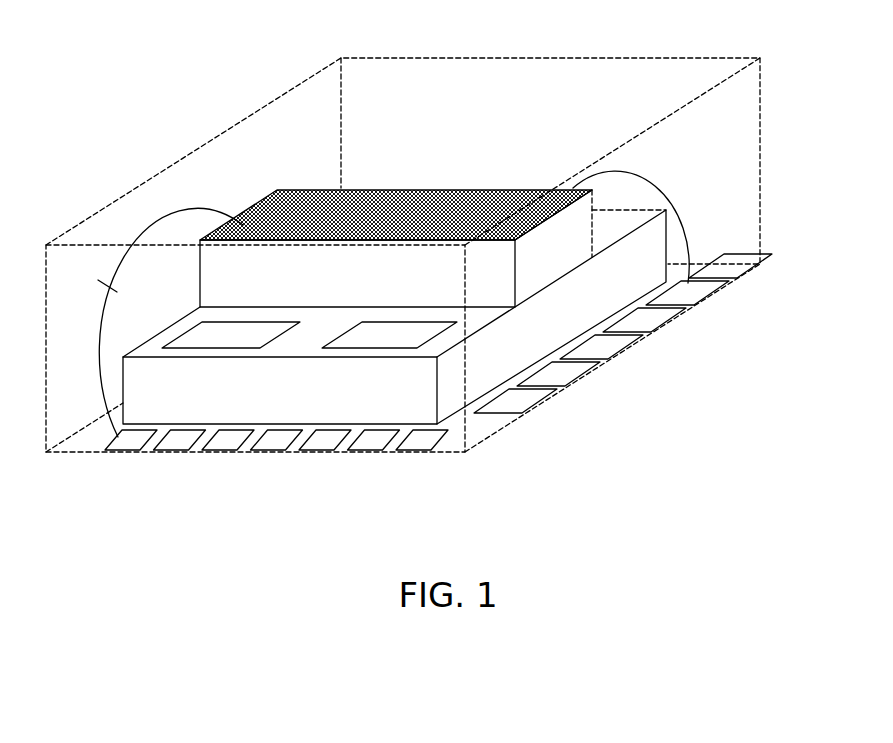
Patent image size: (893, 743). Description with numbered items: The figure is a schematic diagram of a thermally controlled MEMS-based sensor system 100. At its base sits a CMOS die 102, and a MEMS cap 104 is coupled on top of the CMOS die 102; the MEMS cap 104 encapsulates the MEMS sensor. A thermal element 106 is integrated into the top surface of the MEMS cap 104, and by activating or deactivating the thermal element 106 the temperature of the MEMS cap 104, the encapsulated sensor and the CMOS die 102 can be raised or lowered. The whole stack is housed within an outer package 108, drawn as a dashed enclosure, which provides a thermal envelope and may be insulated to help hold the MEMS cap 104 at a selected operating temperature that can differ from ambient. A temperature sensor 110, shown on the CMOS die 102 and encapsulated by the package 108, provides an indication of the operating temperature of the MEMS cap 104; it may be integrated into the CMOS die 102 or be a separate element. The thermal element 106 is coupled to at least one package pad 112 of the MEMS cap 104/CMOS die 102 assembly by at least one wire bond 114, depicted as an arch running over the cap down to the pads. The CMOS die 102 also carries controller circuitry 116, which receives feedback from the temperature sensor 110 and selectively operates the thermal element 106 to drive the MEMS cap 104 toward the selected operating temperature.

The system 100 is at (134, 83).
The CMOS die 102 is at (268, 400).
The MEMS cap 104 is at (331, 286).
The thermal element 106 is at (415, 202).
The outer package 108 is at (500, 59).
The temperature sensor 110 is at (208, 345).
The package pad 112 is at (693, 296).
The wire bond 114 is at (670, 205).
The controller circuitry 116 is at (371, 345).